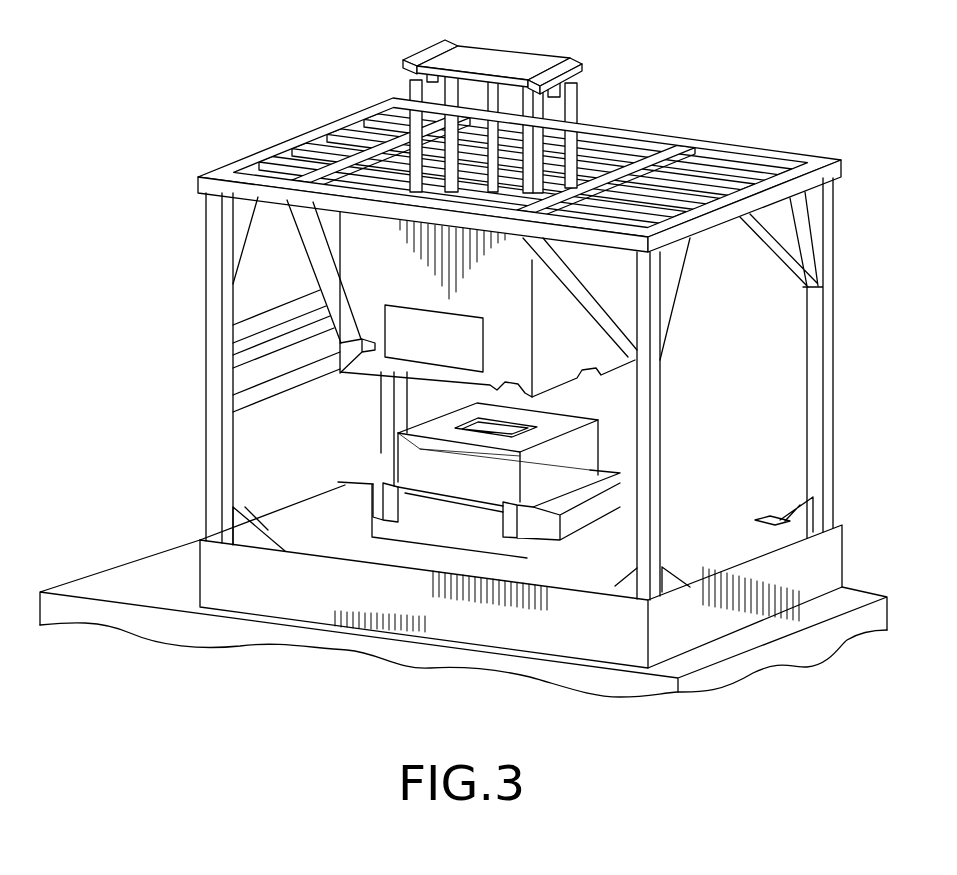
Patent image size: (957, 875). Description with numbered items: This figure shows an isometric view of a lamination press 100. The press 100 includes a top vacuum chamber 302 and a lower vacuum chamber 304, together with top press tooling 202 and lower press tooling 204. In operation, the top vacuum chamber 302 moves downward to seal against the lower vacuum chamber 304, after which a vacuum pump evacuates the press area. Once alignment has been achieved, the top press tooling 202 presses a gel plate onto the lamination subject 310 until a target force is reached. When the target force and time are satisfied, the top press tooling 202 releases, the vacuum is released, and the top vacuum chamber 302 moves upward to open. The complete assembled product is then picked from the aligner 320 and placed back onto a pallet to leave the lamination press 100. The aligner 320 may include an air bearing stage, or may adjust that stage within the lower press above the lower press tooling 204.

The press 100 is at (168, 96).
The top press tooling 202 is at (212, 407).
The lower press tooling 204 is at (392, 453).
The top vacuum chamber 302 is at (410, 327).
The lower vacuum chamber 304 is at (357, 502).
The lamination subject 310 is at (467, 478).
The aligner 320 is at (522, 522).